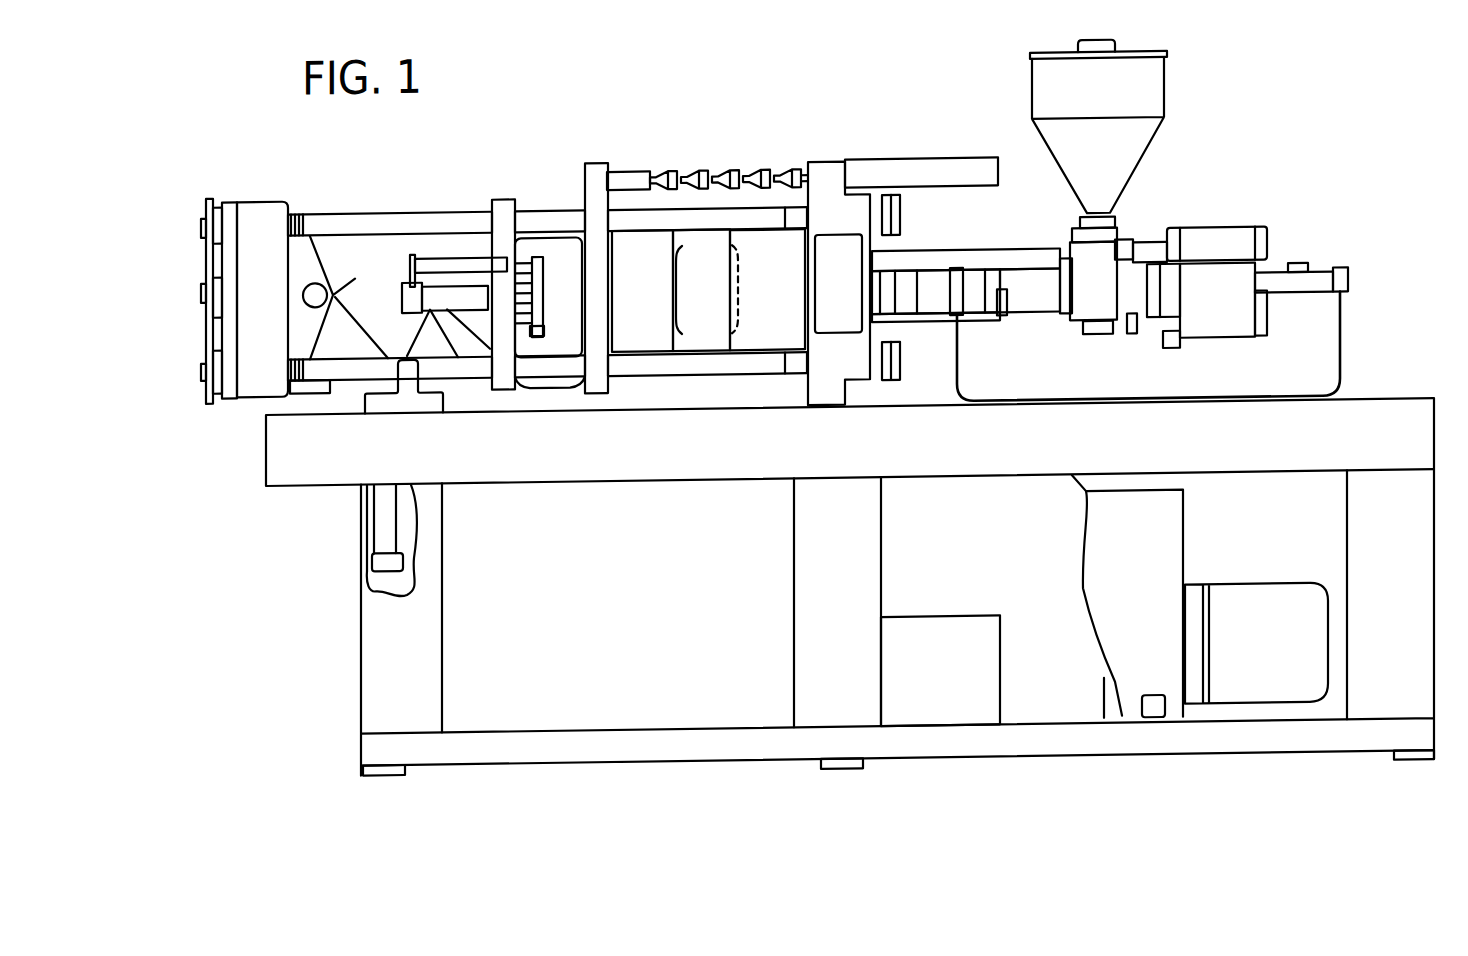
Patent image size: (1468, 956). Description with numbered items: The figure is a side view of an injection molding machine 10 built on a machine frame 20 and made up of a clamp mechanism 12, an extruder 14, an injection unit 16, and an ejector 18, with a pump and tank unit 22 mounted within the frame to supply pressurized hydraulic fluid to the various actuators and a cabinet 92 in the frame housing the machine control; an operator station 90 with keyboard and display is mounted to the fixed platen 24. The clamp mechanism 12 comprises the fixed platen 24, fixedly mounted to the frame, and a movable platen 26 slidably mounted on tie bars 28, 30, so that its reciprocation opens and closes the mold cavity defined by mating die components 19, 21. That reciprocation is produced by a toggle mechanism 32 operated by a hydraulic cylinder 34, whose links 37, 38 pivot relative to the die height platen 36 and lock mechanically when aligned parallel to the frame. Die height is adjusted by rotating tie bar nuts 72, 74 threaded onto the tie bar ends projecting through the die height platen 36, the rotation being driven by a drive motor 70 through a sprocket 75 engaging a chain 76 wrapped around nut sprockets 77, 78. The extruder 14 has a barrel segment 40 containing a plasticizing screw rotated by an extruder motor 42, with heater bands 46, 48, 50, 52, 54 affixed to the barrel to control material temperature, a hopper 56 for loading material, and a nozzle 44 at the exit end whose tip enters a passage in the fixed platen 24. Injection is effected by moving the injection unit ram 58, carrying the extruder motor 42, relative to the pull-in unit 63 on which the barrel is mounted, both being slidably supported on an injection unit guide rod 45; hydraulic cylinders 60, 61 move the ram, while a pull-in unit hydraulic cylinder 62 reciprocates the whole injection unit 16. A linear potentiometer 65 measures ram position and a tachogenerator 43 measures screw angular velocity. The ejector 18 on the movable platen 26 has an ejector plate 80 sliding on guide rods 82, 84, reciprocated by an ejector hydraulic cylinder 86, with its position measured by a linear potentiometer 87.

The injection molding machine 10 is at (773, 62).
The clamp mechanism 12 is at (497, 148).
The extruder 14 is at (1012, 212).
The injection unit 16 is at (1225, 160).
The ejector 18 is at (522, 226).
The die component 19 is at (618, 323).
The machine frame 20 is at (1398, 427).
The die component 21 is at (753, 306).
The pump and tank unit 22 is at (1121, 577).
The fixed platen 24 is at (825, 176).
The movable platen 26 is at (607, 170).
The tie bar 28 is at (375, 217).
The tie bar 30 is at (330, 383).
The toggle mechanism 32 is at (356, 240).
The hydraulic cylinder 34 is at (365, 521).
The die height platen 36 is at (272, 210).
The toggle link 37 is at (338, 311).
The toggle link 38 is at (425, 347).
The barrel segment 40 is at (945, 268).
The extruder motor 42 is at (1300, 283).
The tachogenerator 43 is at (1170, 357).
The nozzle 44 is at (880, 259).
The injection unit guide rod 45 is at (1325, 307).
The heater band 46 is at (897, 334).
The heater band 48 is at (905, 321).
The heater band 50 is at (950, 278).
The heater band 52 is at (960, 335).
The heater band 54 is at (1000, 326).
The hopper 56 is at (1155, 108).
The injection unit ram 58 is at (1196, 326).
The hydraulic cylinder 60 is at (1262, 343).
The hydraulic cylinder 61 is at (1258, 245).
The pull-in unit hydraulic cylinder 62 is at (1140, 337).
The pull-in unit 63 is at (1076, 291).
The linear potentiometer 65 is at (1270, 273).
The drive motor 70 is at (232, 298).
The tie bar nut 72 is at (240, 205).
The tie bar nut 74 is at (213, 399).
The sprocket 75 is at (203, 294).
The chain 76 is at (213, 199).
The nut sprocket 77 is at (203, 227).
The nut sprocket 78 is at (203, 371).
The ejector plate 80 is at (540, 334).
The guide rod 82 is at (560, 274).
The guide rod 84 is at (568, 314).
The ejector hydraulic cylinder 86 is at (408, 300).
The linear potentiometer 87 is at (452, 271).
The operator station 90 is at (823, 302).
The cabinet 92 is at (923, 693).